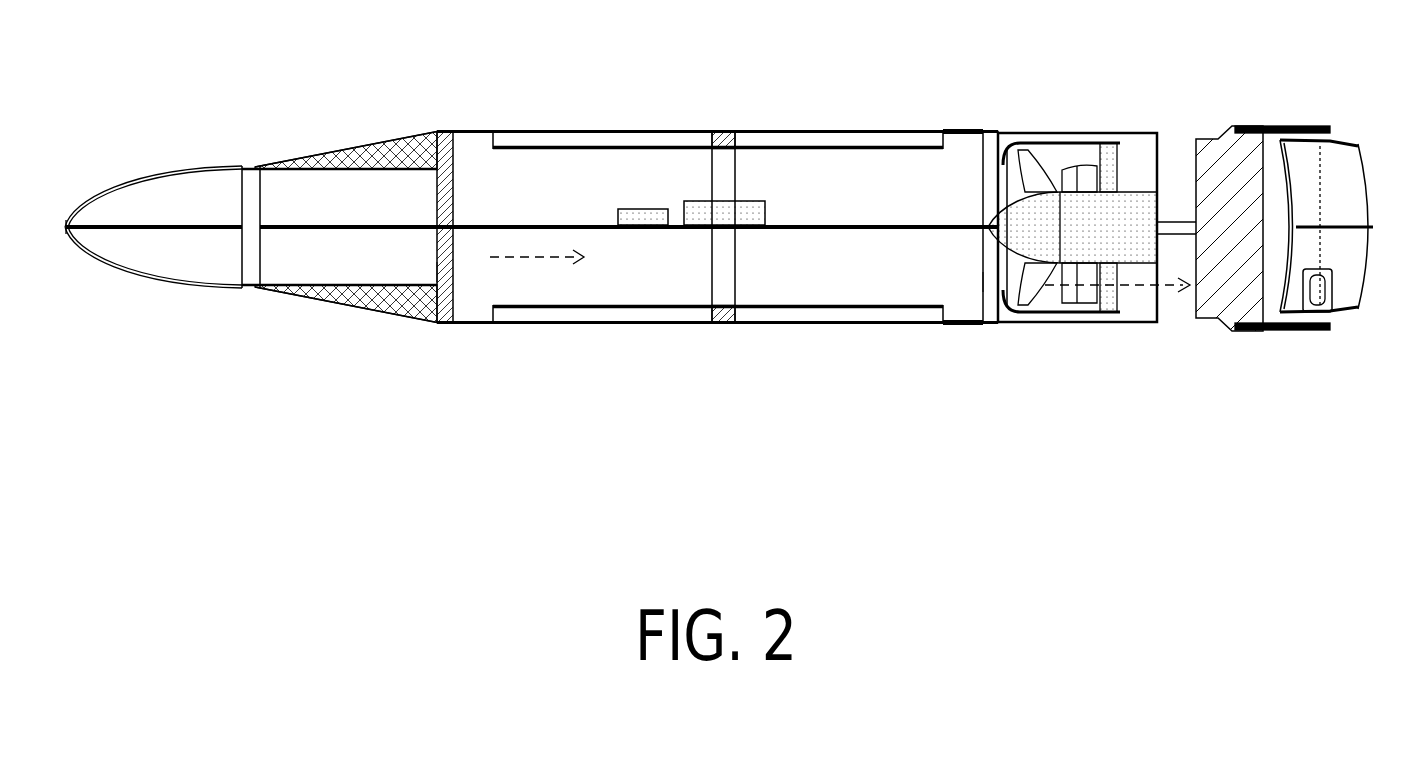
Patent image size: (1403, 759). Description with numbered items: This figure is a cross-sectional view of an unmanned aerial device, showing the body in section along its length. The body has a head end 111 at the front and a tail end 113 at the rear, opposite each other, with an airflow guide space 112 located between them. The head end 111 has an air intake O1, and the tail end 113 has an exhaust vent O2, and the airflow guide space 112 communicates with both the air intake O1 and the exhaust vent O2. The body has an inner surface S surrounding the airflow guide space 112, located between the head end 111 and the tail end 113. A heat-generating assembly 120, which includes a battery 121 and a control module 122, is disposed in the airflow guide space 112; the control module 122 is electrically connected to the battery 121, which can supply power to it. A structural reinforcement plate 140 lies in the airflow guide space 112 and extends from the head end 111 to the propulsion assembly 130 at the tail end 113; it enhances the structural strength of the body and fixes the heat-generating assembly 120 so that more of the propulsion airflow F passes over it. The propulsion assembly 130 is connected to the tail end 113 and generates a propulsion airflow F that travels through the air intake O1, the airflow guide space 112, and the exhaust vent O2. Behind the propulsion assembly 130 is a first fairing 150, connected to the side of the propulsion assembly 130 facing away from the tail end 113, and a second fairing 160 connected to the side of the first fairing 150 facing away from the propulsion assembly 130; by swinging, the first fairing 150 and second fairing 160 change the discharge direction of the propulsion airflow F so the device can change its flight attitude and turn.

The head end 111 is at (431, 131).
The airflow guide space 112 is at (541, 185).
The tail end 113 is at (980, 160).
The heat-generating assembly 120 is at (689, 121).
The battery 121 is at (700, 201).
The control module 122 is at (648, 209).
The propulsion assembly 130 is at (1086, 133).
The structural reinforcement plate 140 is at (825, 230).
The first fairing 150 is at (1211, 138).
The second fairing 160 is at (1341, 140).
The inner surface S is at (828, 121).
The air intake O1 is at (434, 284).
The exhaust vent O2 is at (979, 294).
The propulsion airflow F is at (518, 259).